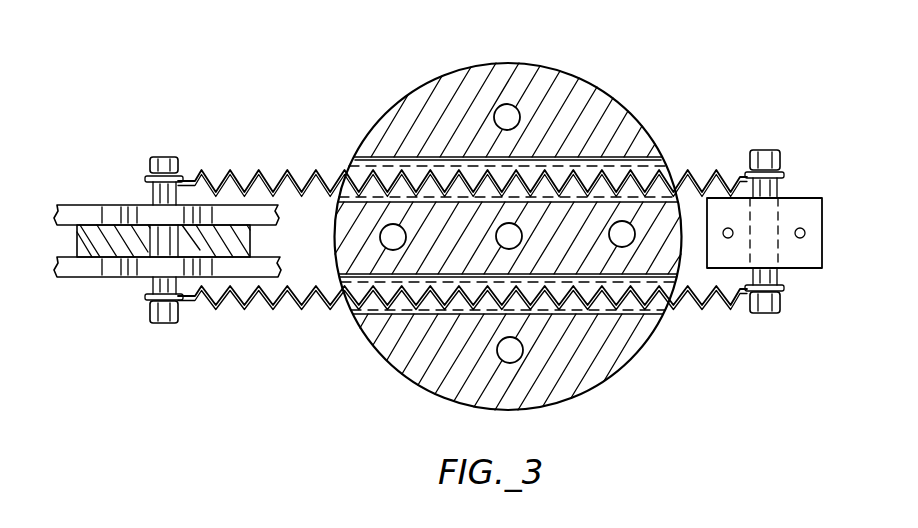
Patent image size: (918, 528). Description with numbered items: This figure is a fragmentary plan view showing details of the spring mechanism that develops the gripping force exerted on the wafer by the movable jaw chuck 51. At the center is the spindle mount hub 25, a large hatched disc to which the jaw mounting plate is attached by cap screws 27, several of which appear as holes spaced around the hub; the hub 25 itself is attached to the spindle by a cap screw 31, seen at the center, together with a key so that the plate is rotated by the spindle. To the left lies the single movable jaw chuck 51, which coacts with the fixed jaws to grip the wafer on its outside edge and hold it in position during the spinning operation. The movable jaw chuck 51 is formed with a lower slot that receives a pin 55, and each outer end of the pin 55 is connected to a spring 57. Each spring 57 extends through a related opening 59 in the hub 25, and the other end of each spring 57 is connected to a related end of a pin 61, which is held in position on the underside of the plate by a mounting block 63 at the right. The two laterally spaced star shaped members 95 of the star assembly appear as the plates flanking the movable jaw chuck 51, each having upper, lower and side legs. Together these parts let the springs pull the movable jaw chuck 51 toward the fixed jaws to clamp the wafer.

The spindle mount hub 25 is at (572, 82).
The cap screws 27 is at (497, 114).
The cap screw 31 is at (498, 227).
The movable jaw chuck 51 is at (85, 237).
The pin 55 is at (162, 157).
The spring 57 is at (258, 170).
The opening 59 is at (652, 162).
The pin 61 is at (768, 152).
The mounting block 63 is at (792, 198).
The star shaped members 95 is at (107, 205).